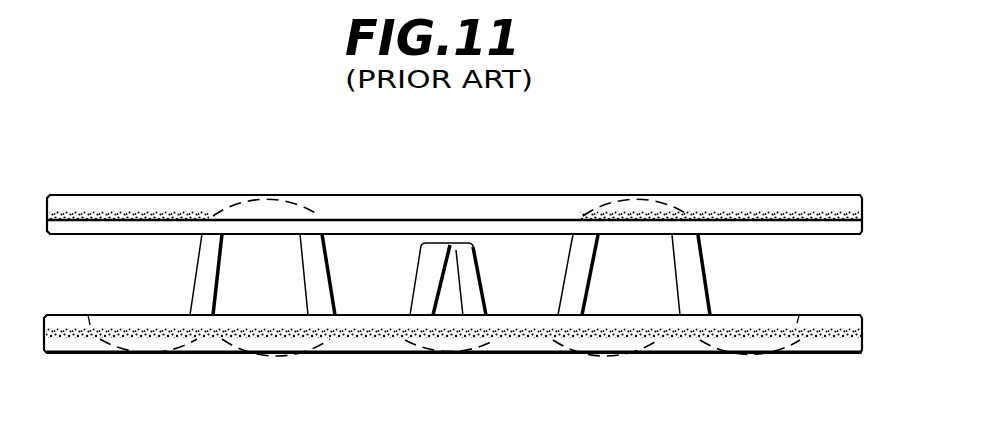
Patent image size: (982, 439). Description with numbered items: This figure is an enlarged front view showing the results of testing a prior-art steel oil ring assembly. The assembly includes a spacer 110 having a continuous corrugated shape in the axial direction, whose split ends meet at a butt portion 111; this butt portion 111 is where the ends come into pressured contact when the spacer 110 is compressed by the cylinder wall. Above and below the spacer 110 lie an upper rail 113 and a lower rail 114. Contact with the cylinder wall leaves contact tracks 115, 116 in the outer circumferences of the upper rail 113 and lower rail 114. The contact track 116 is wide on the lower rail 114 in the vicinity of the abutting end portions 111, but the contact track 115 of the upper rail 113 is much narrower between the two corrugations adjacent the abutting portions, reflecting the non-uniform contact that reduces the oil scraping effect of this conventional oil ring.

The spacer 110 is at (692, 262).
The butt portion 111 is at (447, 243).
The upper rail 113 is at (167, 195).
The lower rail 114 is at (242, 355).
The contact track 115 is at (382, 218).
The contact track 116 is at (447, 357).